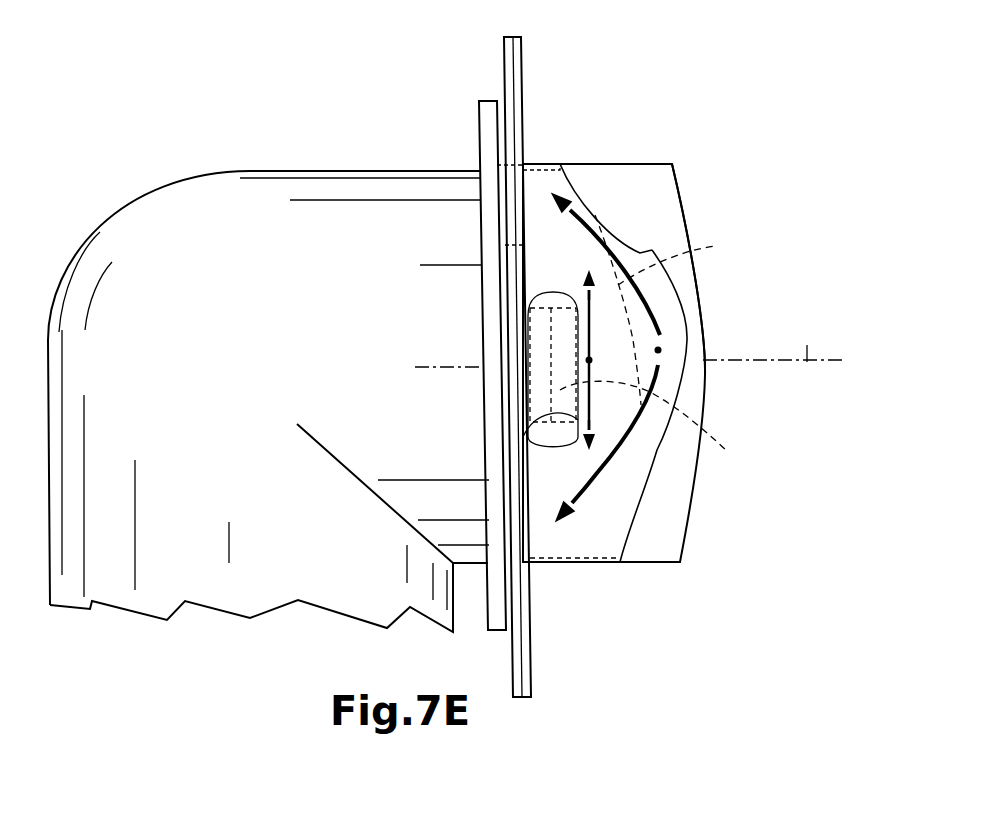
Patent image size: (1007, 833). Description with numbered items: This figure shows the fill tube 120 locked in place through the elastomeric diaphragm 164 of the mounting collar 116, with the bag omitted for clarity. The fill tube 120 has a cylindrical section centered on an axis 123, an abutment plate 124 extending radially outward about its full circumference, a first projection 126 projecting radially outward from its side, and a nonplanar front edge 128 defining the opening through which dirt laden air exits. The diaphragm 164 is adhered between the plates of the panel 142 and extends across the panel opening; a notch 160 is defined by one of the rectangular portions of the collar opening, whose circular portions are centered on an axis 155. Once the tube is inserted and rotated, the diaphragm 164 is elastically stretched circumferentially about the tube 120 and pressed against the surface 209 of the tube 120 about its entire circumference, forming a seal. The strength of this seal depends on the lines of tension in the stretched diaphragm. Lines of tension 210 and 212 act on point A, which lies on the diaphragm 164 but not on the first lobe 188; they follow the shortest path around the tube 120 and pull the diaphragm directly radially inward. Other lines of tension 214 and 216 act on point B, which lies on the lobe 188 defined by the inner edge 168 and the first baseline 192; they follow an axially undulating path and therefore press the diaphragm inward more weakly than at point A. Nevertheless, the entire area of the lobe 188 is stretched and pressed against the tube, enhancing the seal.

The mounting collar 116 is at (450, 36).
The fill tube 120 is at (712, 384).
The axis 123 is at (811, 345).
The abutment plate 124 is at (479, 125).
The first projection 126 is at (668, 423).
The front edge 128 is at (688, 215).
The panel 142 is at (501, 62).
The axis 155 is at (836, 360).
The notch 160 is at (470, 220).
The elastomeric diaphragm 164 is at (549, 163).
The inner edge 168 is at (640, 545).
The first lobe 188 is at (663, 298).
The first baseline 192 is at (689, 261).
The surface 209 is at (663, 477).
The line of tension 210 is at (586, 300).
The line of tension 212 is at (548, 404).
The line of tension 214 is at (655, 312).
The line of tension 216 is at (625, 488).
The point A is at (592, 362).
The point B is at (662, 351).